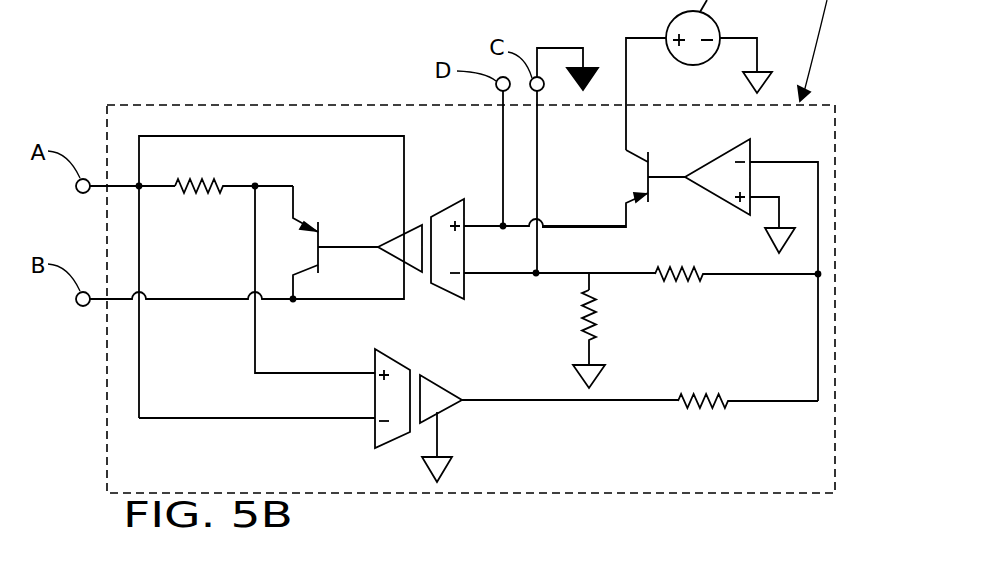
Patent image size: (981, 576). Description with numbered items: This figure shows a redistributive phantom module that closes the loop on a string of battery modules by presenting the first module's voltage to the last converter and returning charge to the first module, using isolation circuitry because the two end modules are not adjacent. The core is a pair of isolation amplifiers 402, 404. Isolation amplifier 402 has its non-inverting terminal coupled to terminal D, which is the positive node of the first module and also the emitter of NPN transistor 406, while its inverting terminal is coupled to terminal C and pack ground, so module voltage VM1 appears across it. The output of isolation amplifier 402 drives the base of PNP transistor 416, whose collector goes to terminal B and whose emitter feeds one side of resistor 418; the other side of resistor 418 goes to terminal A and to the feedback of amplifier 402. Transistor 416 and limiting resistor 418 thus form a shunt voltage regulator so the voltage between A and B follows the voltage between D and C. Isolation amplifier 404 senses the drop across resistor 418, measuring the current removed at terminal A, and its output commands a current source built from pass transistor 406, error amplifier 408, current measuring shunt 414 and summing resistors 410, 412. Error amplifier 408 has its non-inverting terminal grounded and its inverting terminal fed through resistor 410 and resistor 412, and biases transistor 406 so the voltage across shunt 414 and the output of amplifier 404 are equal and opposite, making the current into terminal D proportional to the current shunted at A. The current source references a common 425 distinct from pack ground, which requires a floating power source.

The isolation amplifier 402 is at (440, 225).
The isolation amplifier 404 is at (425, 395).
The NPN transistor 406 is at (641, 170).
The operational amplifier 408 is at (716, 165).
The resistor 410 is at (681, 283).
The resistor 412 is at (712, 408).
The resistor 414 is at (583, 315).
The PNP transistor 416 is at (319, 240).
The resistor 418 is at (186, 192).
The common 425 is at (748, 79).